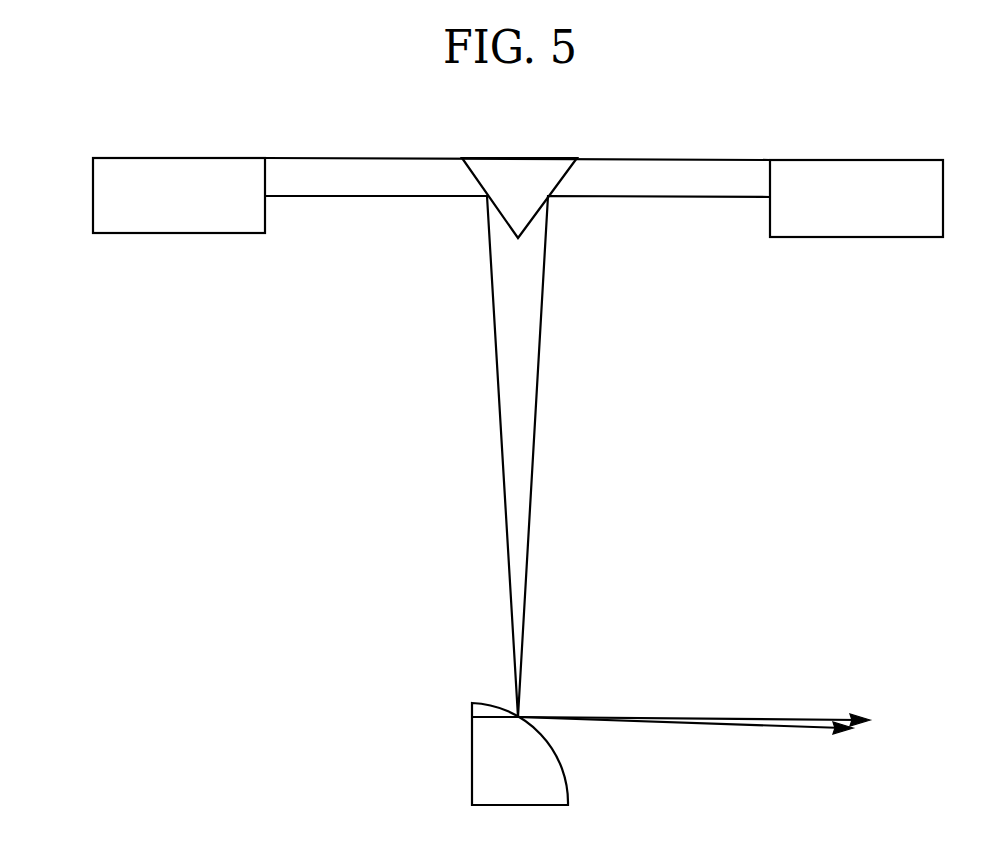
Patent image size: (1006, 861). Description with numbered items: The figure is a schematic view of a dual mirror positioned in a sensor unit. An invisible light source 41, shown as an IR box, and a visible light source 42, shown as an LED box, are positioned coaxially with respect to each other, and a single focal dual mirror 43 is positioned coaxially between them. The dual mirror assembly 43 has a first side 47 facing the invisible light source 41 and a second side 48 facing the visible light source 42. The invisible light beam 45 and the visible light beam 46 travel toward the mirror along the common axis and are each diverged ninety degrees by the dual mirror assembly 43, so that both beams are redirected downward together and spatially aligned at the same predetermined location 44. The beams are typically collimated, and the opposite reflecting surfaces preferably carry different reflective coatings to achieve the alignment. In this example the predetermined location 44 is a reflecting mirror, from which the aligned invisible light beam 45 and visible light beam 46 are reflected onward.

The invisible light source 41 is at (93, 213).
The visible light source 42 is at (943, 207).
The single focal dual mirror 43 is at (519, 158).
The predetermined location 44 is at (518, 717).
The invisible light beam 45 is at (357, 196).
The visible light beam 46 is at (672, 197).
The first side 47 is at (472, 180).
The second side 48 is at (565, 180).